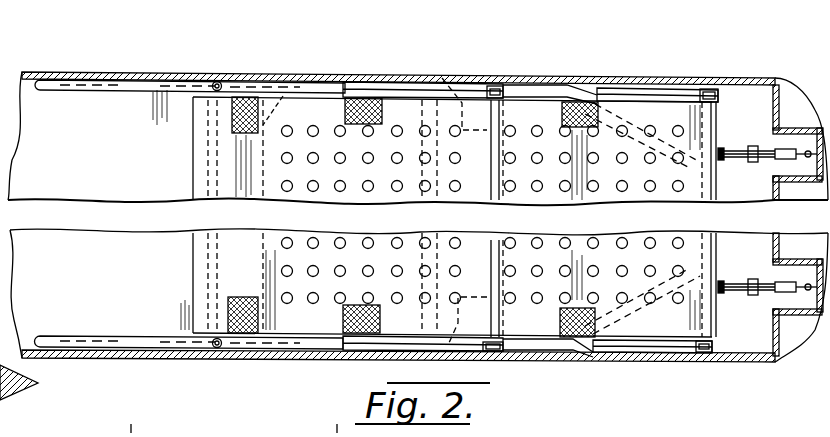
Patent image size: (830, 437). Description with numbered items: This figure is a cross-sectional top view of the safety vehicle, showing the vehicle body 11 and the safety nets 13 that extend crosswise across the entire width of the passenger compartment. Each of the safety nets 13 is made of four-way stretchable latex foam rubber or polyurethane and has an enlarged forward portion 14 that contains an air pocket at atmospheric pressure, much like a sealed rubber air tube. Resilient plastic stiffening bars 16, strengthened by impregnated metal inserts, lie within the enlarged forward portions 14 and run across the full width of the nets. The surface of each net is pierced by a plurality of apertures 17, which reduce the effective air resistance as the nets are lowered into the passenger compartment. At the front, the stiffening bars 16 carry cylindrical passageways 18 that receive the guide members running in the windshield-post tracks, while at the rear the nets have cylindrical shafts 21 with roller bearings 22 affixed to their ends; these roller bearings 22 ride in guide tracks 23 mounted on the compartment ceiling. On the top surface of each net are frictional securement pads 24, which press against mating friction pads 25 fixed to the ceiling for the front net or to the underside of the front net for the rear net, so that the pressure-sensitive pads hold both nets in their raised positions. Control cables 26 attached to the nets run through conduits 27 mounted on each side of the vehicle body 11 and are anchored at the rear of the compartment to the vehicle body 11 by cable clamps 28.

The vehicle body 11 is at (738, 80).
The safety nets 13 is at (316, 110).
The enlarged forward portions 14 is at (192, 173).
The stiffening bars 16 is at (283, 96).
The apertures 17 is at (311, 191).
The cylindrical passageways 18 is at (205, 289).
The cylindrical shafts 21 is at (479, 218).
The roller bearings 22 is at (492, 85).
The guide tracks 23 is at (397, 88).
The frictional securement pads 24 is at (238, 100).
The friction pads 25 is at (442, 78).
The control cables 26 is at (216, 82).
The conduits 27 is at (553, 88).
The cable clamps 28 is at (786, 280).